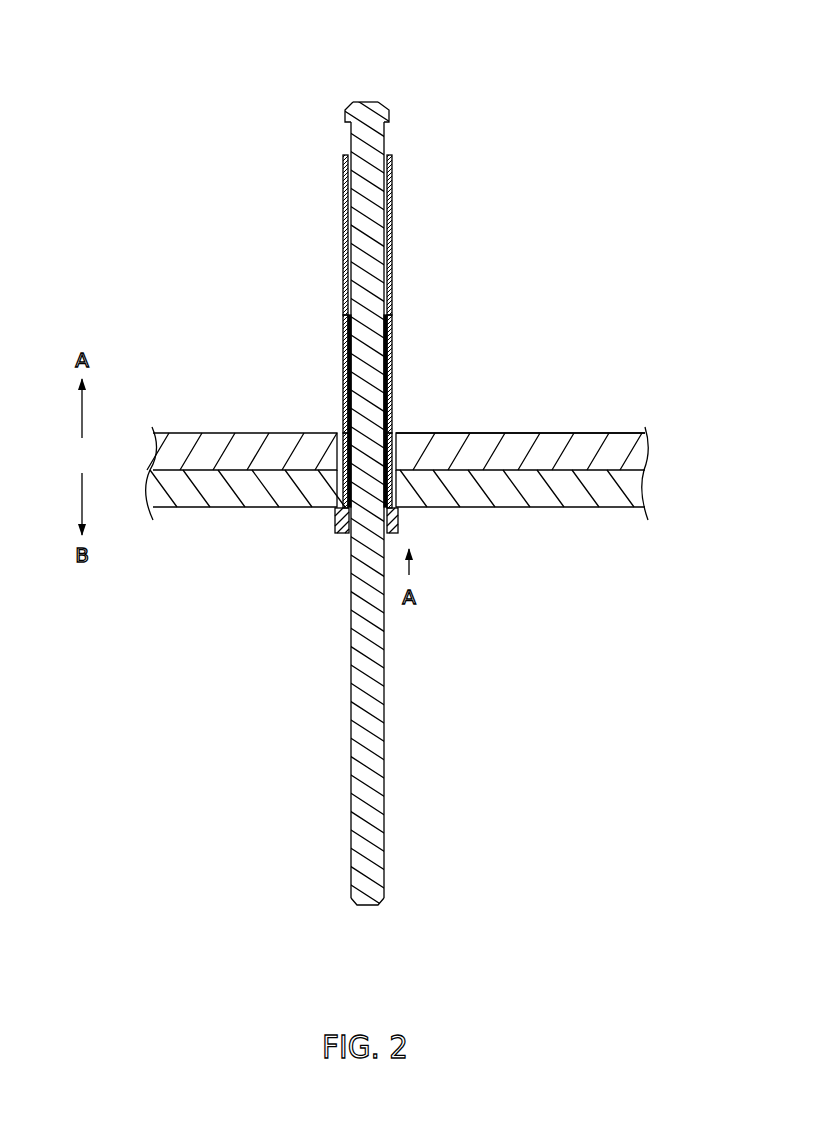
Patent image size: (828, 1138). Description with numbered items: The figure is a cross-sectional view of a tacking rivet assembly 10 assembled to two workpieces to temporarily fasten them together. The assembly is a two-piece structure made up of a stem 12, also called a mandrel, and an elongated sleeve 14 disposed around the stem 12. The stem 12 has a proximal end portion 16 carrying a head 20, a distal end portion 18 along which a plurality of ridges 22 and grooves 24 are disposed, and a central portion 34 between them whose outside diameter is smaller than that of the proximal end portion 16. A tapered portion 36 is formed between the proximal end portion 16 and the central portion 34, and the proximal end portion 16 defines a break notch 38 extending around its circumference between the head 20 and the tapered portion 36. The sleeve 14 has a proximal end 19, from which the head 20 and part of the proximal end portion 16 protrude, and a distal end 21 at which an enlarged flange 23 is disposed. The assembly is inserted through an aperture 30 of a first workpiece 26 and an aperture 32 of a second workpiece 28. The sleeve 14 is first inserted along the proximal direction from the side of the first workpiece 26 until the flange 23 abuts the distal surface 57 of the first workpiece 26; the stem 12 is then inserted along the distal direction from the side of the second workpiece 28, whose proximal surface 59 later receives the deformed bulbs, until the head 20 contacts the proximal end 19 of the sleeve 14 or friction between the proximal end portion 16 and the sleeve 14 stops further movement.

The tacking rivet assembly 10 is at (437, 133).
The stem 12 is at (368, 602).
The elongated sleeve 14 is at (392, 293).
The proximal end portion 16 is at (346, 132).
The distal end portion 18 is at (348, 845).
The proximal end 19 is at (342, 165).
The head 20 is at (388, 108).
The distal end 21 is at (333, 517).
The ridges 22 is at (385, 672).
The flange 23 is at (342, 528).
The grooves 24 is at (350, 725).
The first workpiece 26 is at (617, 507).
The second workpiece 28 is at (597, 437).
The aperture 30 is at (398, 493).
The aperture 32 is at (398, 451).
The central portion 34 is at (366, 372).
The tapered portion 36 is at (346, 316).
The break notch 38 is at (386, 251).
The distal surface 57 is at (520, 508).
The proximal surface 59 is at (530, 433).